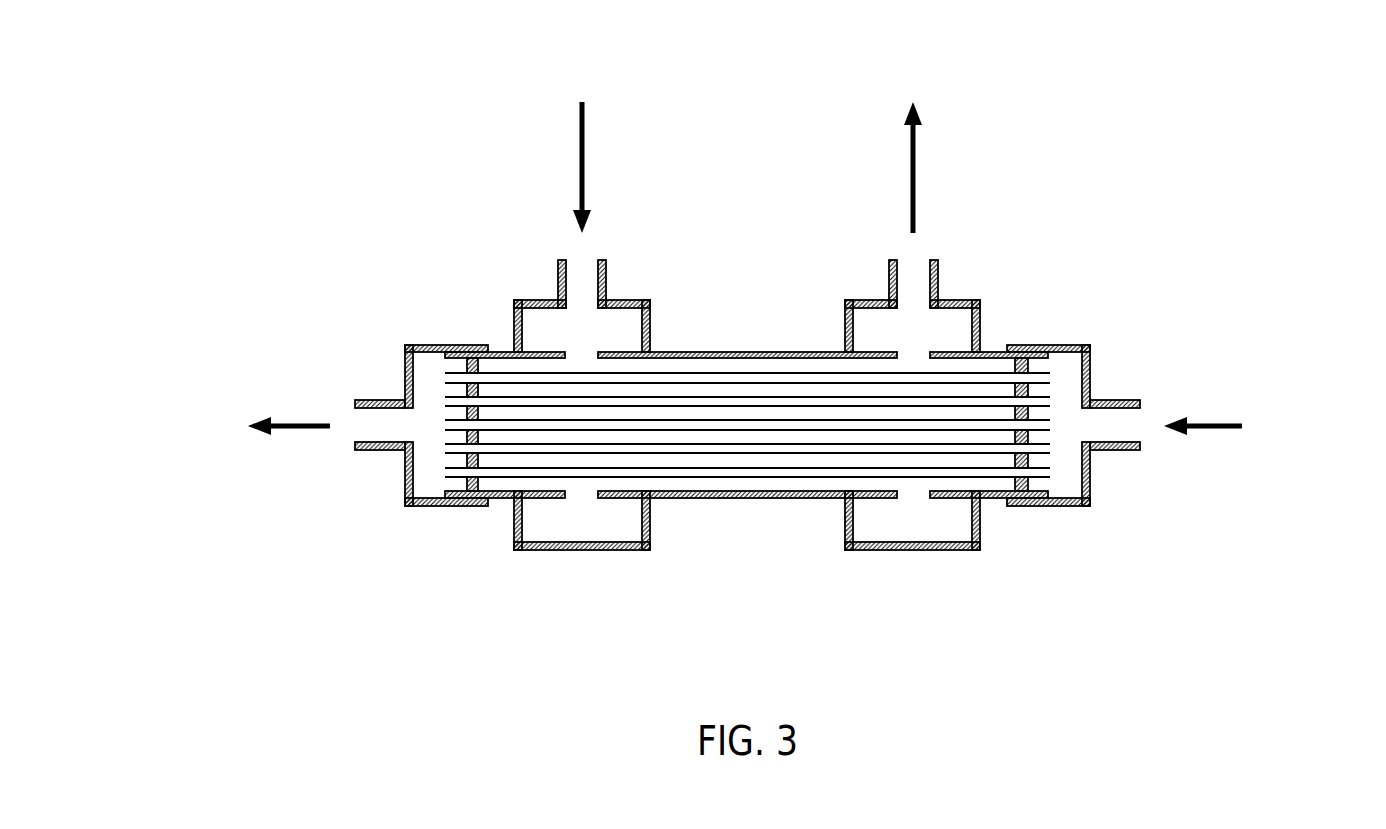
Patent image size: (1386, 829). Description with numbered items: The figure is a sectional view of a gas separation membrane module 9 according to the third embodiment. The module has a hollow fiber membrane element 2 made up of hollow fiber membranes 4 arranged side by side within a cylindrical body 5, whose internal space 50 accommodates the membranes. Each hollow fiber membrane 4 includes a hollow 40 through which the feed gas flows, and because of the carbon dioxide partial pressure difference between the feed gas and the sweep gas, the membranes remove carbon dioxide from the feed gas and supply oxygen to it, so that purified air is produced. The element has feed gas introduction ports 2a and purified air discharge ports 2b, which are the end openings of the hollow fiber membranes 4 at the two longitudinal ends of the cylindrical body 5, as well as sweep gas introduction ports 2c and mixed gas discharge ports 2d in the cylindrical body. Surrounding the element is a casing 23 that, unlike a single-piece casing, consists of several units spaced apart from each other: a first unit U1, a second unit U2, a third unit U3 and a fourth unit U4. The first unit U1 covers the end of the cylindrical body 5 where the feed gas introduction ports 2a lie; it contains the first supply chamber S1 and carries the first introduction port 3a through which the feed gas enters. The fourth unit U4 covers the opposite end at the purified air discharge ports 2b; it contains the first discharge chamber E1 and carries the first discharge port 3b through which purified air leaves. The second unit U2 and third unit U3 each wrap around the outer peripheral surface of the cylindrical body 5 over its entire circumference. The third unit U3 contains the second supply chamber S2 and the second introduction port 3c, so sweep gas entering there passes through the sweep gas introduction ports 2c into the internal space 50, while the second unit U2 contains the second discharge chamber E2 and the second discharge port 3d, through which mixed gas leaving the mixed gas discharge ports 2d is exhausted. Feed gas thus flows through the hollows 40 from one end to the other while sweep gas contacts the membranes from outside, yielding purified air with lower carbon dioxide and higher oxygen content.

The gas separation membrane module 9 is at (1154, 187).
The hollow fiber membrane element 2 is at (730, 500).
The feed gas introduction ports 2a is at (1047, 376).
The purified air discharge ports 2b is at (447, 377).
The sweep gas introduction ports 2c is at (598, 350).
The mixed gas discharge ports 2d is at (930, 350).
The first introduction port 3a is at (1141, 444).
The first discharge port 3b is at (353, 447).
The second introduction port 3c is at (600, 263).
The second discharge port 3d is at (930, 263).
The hollow fiber membranes 4 is at (818, 478).
The hollow 40 is at (782, 472).
The cylindrical body 5 is at (703, 350).
The internal space 50 is at (777, 370).
The casing 23 is at (1054, 343).
The first discharge chamber E1 is at (427, 487).
The second discharge chamber E2 is at (913, 530).
The first supply chamber S1 is at (1065, 493).
The second supply chamber S2 is at (580, 530).
The first unit U1 is at (1078, 505).
The second unit U2 is at (952, 552).
The third unit U3 is at (625, 550).
The fourth unit U4 is at (460, 505).